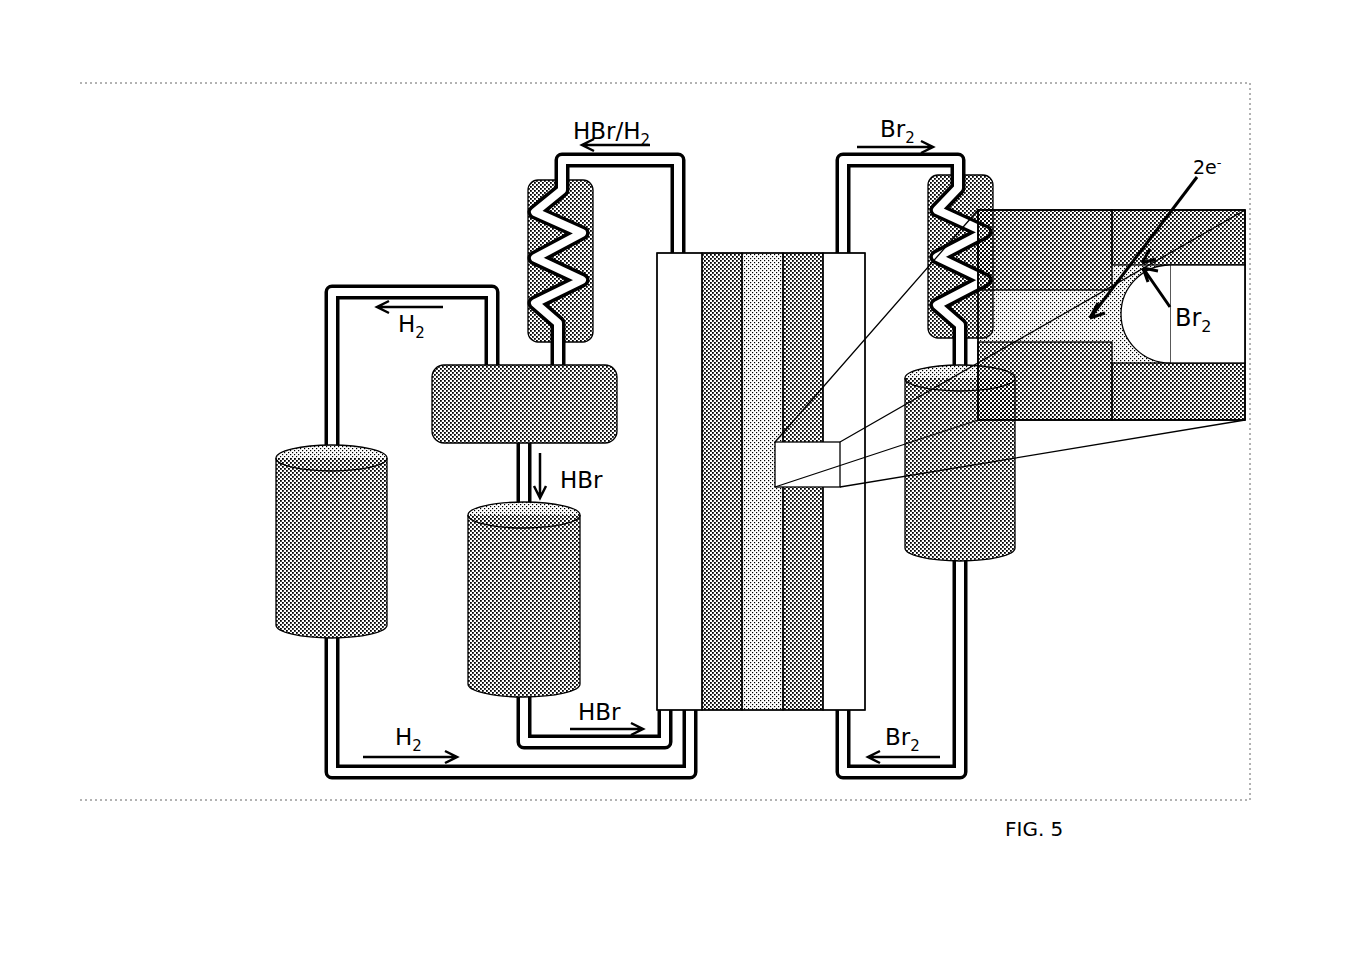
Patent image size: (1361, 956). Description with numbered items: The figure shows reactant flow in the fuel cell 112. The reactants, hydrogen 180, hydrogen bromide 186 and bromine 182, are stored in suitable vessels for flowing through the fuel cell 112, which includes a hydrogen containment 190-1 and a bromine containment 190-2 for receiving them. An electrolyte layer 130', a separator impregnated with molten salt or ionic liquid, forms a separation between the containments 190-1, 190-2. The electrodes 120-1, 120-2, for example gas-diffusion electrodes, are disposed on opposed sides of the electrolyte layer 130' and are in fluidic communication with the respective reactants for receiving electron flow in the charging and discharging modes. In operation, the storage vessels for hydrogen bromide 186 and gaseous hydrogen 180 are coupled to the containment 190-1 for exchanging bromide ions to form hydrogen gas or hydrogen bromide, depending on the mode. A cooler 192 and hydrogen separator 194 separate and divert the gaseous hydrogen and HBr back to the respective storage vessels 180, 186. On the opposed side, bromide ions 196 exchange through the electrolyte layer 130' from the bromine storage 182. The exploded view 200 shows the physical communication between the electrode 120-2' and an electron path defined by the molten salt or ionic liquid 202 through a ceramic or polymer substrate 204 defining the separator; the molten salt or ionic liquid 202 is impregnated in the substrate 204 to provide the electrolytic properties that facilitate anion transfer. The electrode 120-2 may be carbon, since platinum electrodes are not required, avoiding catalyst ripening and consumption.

The fuel cell 112 is at (748, 151).
The electrode 120-1 is at (722, 253).
The electrolyte layer 130' is at (767, 357).
The electrode 120-2 is at (815, 378).
The electrode 120-2' is at (1223, 319).
The hydrogen containment 190-1 is at (655, 253).
The bromine containment 190-2 is at (888, 230).
The cooler 192 is at (528, 184).
The hydrogen separator 194 is at (428, 405).
The hydrogen 180 is at (278, 512).
The hydrogen bromide 186 is at (468, 648).
The bromine 182 is at (1005, 563).
The bromide ions 196 is at (1060, 307).
The exploded view 200 is at (1247, 212).
The molten salt or ionic liquid 202 is at (1002, 310).
The ceramic or polymer substrate 204 is at (1028, 210).